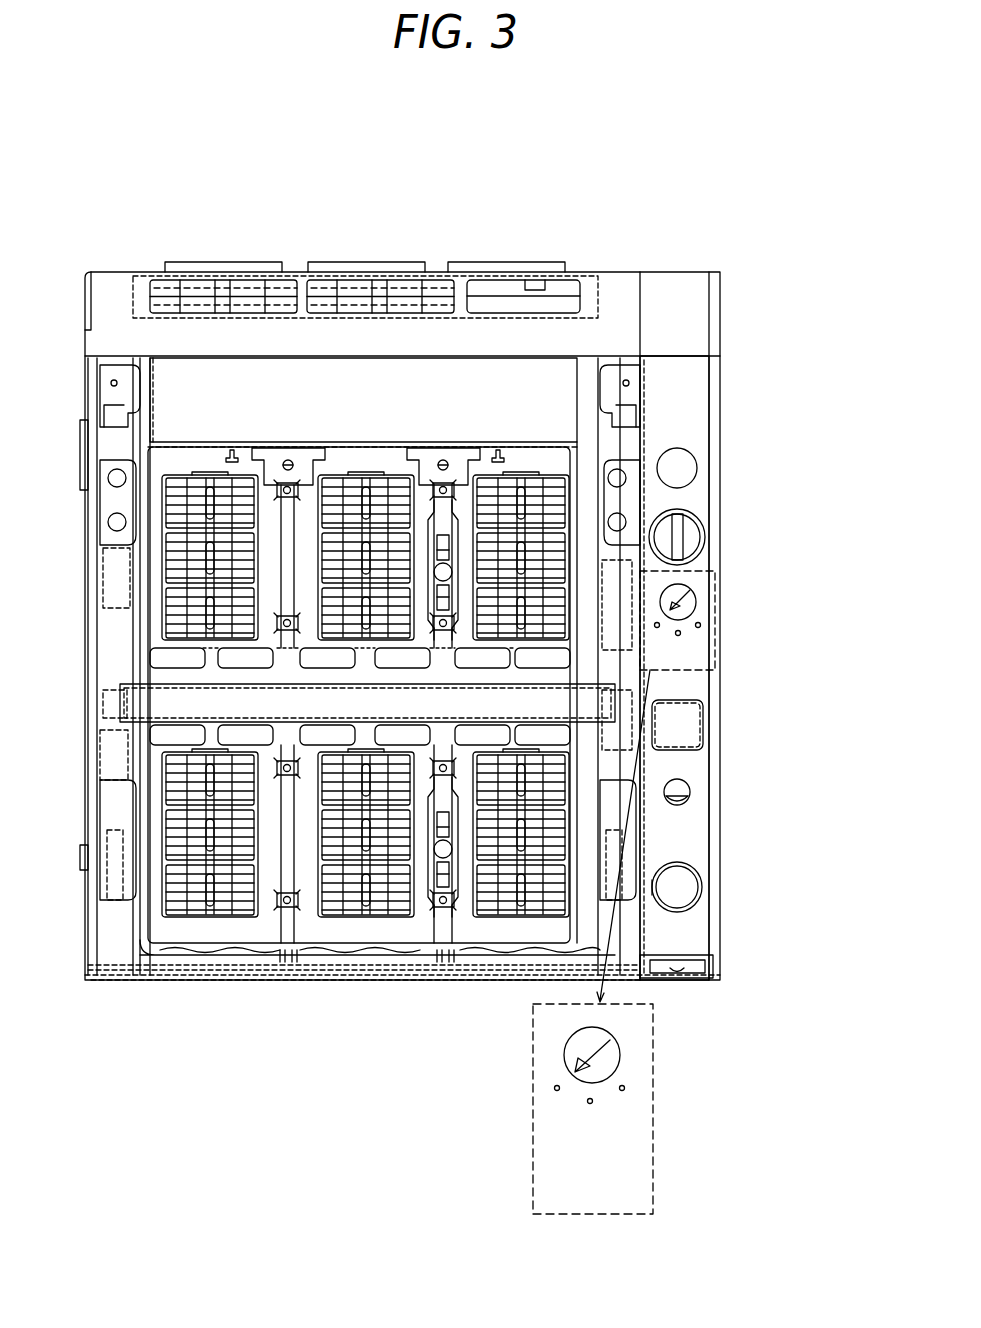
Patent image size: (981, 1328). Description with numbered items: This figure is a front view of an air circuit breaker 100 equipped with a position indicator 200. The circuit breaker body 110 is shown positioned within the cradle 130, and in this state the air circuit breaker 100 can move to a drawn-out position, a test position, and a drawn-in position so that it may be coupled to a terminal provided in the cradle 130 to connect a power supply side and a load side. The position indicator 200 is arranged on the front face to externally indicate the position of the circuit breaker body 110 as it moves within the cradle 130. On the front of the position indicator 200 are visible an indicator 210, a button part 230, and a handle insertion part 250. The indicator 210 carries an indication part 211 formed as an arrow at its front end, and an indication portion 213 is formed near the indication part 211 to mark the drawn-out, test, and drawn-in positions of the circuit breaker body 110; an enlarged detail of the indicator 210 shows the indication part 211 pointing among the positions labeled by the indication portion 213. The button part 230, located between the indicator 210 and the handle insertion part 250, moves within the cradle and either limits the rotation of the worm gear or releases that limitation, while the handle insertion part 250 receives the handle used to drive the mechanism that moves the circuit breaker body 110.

The air circuit breaker 100 is at (289, 180).
The circuit breaker body 110 is at (415, 446).
The cradle 130 is at (352, 980).
The position indicator 200 is at (690, 391).
The indicator 210 is at (687, 594).
The indication part 211 is at (678, 602).
The indication portion 213 is at (700, 625).
The button part 230 is at (684, 733).
The handle insertion part 250 is at (680, 793).